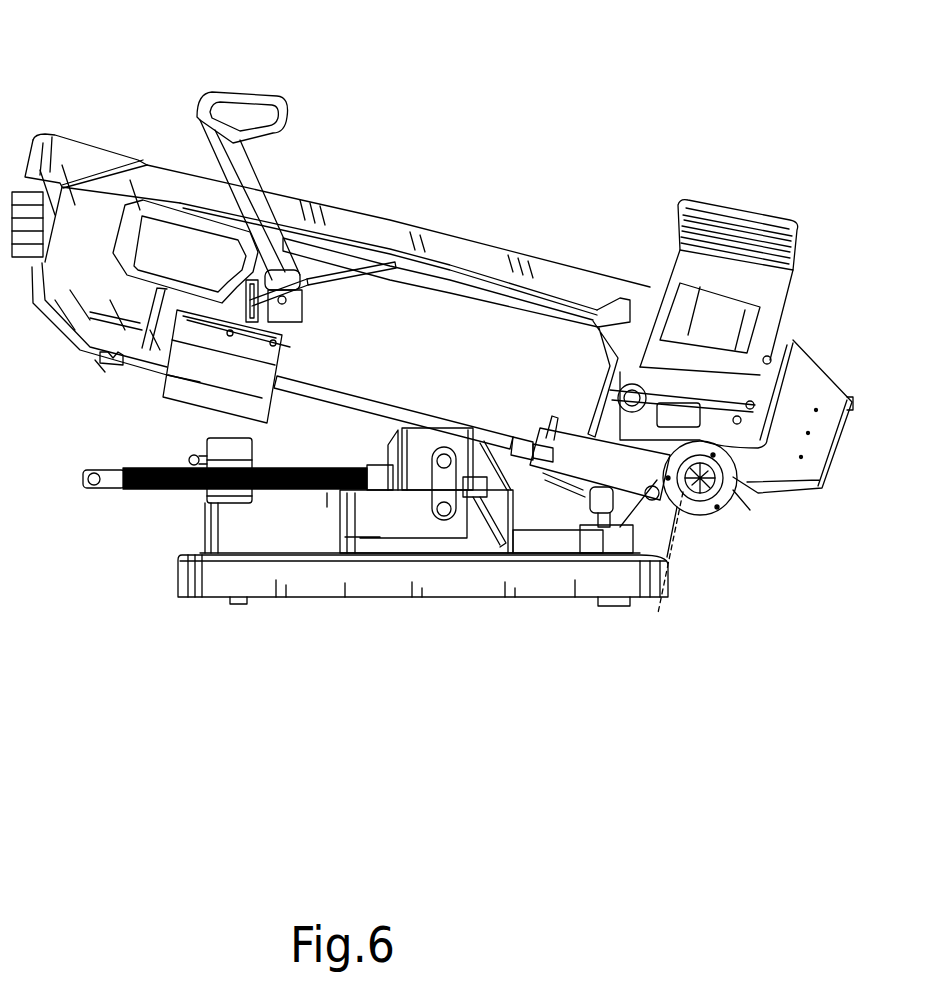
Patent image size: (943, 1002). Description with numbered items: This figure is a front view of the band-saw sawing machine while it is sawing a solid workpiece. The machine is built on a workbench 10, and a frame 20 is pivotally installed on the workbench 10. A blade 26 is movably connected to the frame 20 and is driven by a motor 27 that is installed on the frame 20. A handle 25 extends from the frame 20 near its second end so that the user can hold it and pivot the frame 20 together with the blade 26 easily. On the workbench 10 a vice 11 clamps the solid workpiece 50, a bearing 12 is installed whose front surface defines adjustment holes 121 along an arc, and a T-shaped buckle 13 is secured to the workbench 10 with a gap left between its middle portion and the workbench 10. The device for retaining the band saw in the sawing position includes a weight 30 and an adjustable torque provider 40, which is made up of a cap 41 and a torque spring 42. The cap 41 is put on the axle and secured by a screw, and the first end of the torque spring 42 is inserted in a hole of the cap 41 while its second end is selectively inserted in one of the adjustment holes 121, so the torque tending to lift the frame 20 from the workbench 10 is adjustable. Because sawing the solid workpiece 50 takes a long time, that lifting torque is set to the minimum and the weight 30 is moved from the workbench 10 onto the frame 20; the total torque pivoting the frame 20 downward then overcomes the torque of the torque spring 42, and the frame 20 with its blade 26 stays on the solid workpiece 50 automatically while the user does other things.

The workbench 10 is at (463, 585).
The vice 11 is at (388, 533).
The bearing 12 is at (700, 516).
The adjustment holes 121 is at (661, 571).
The buckle 13 is at (227, 597).
The frame 20 is at (553, 280).
The handle 25 is at (217, 123).
The blade 26 is at (333, 393).
The motor 27 is at (680, 217).
The weight 30 is at (80, 156).
The adjustable torque provider 40 is at (676, 548).
The cap 41 is at (715, 488).
The torque spring 42 is at (700, 470).
The solid workpiece 50 is at (437, 440).